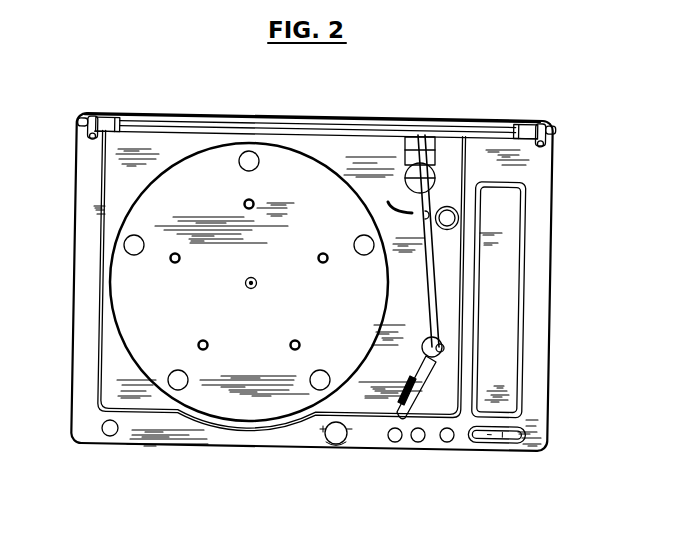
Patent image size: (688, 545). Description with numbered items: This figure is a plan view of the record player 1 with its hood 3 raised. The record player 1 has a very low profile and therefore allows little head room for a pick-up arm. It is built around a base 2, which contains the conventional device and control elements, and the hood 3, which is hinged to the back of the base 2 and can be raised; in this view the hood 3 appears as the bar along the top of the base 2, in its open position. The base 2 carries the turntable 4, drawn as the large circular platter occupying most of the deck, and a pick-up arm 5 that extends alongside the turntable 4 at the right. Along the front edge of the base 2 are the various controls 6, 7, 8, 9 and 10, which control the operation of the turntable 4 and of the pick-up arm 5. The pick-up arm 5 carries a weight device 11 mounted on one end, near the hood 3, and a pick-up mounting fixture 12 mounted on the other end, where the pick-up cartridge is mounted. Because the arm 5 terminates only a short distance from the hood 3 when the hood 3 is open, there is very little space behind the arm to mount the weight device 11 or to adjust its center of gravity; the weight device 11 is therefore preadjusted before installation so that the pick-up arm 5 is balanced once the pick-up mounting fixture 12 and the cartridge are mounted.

The record player 1 is at (555, 324).
The base 2 is at (550, 422).
The hood 3 is at (322, 115).
The turntable 4 is at (130, 286).
The pick-up arm 5 is at (430, 290).
The control 6 is at (334, 444).
The control 7 is at (395, 442).
The control 8 is at (418, 442).
The control 9 is at (448, 442).
The control 10 is at (503, 442).
The weight device 11 is at (431, 160).
The pick-up mounting fixture 12 is at (417, 394).